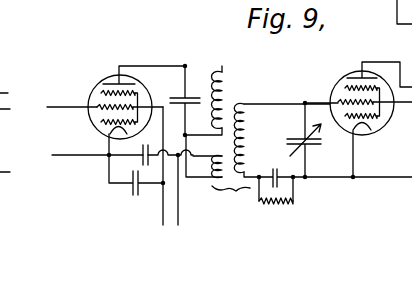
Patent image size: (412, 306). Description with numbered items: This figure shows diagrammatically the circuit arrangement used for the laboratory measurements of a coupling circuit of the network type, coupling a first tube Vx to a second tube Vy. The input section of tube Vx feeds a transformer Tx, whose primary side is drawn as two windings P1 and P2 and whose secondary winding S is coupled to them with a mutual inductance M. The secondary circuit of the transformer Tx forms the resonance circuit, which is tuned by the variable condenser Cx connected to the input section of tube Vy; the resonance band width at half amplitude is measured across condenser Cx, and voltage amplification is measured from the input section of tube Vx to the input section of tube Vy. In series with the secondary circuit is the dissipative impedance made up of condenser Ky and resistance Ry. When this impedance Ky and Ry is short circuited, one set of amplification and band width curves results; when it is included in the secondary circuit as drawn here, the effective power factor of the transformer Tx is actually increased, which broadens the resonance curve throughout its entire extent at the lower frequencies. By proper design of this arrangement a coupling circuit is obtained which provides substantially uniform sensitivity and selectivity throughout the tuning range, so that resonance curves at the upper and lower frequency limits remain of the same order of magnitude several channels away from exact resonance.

The tube Vx is at (102, 80).
The tube Vy is at (334, 84).
The condenser of the dissipative impedance Ky is at (181, 95).
The primary coil P1 is at (203, 100).
The primary coil P2 is at (204, 156).
The secondary coil S is at (233, 91).
The transformer Tx is at (257, 122).
The mutual inductance M is at (231, 197).
The condenser Cx is at (305, 143).
The resistance of the dissipative impedance Ry is at (276, 200).